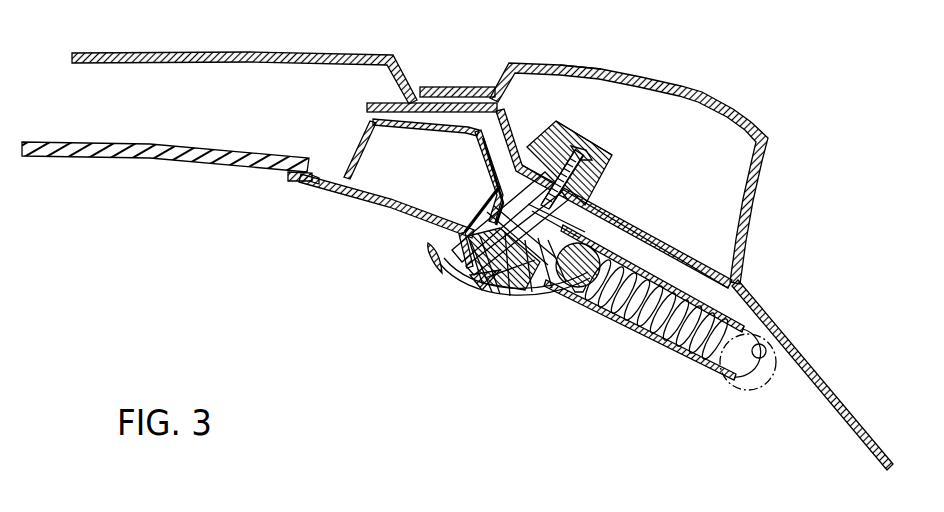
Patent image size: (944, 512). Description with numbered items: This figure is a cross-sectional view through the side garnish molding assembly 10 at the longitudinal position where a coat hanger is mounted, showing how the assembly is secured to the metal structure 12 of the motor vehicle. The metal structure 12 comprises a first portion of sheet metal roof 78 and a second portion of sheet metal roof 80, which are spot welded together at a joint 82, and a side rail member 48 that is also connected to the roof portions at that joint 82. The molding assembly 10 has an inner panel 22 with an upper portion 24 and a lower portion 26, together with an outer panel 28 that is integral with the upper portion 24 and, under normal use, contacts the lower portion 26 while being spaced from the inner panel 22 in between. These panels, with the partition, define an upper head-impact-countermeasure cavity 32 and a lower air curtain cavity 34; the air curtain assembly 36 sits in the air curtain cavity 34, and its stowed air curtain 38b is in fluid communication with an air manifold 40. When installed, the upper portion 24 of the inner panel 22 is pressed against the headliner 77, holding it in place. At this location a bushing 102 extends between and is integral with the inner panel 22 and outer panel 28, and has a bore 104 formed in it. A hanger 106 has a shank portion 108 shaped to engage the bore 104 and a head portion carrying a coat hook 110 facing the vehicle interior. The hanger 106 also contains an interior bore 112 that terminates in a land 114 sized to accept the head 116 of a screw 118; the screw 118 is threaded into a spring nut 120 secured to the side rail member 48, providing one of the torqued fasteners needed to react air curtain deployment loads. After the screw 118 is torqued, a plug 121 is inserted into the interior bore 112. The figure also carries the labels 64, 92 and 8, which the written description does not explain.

The side garnish molding assembly 10 is at (375, 388).
The metal structure 12 is at (700, 91).
The inner panel 22 is at (395, 208).
The upper portion 24 is at (315, 186).
The lower portion 26 is at (767, 368).
The outer panel 28 is at (481, 130).
The head-impact-countermeasure cavity 32 is at (400, 165).
The air curtain cavity 34 is at (735, 353).
The air curtain assembly 36 is at (667, 353).
The air curtain 38b is at (710, 373).
The air manifold 40 is at (582, 300).
The side rail member 48 is at (519, 128).
The support plate 64 is at (630, 240).
The headliner 77 is at (135, 143).
The first portion of sheet metal roof 78 is at (196, 52).
The second portion of sheet metal roof 80 is at (567, 64).
The joint 82 is at (486, 82).
The tab 92 is at (285, 182).
The bushing 102 is at (487, 198).
The bore 104 is at (485, 282).
The hanger 106 is at (444, 272).
The shank portion 108 is at (537, 287).
The coat hook 110 is at (427, 257).
The interior bore 112 is at (490, 222).
The land 114 is at (600, 226).
The head 116 is at (512, 286).
The screw 118 is at (594, 164).
The spring nut 120 is at (604, 150).
The plug 121 is at (480, 290).
The detail view FIG. 8 is at (755, 396).